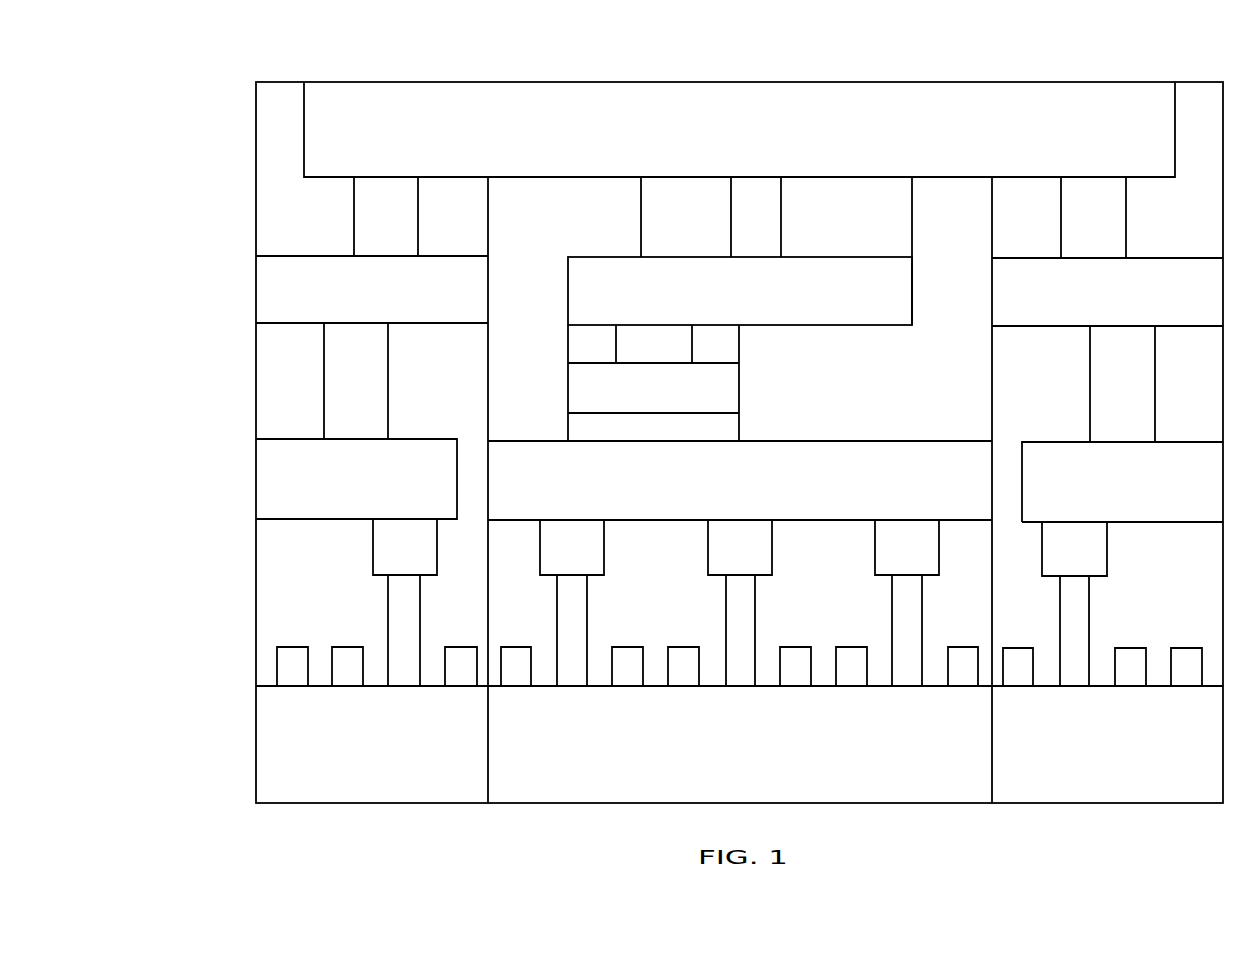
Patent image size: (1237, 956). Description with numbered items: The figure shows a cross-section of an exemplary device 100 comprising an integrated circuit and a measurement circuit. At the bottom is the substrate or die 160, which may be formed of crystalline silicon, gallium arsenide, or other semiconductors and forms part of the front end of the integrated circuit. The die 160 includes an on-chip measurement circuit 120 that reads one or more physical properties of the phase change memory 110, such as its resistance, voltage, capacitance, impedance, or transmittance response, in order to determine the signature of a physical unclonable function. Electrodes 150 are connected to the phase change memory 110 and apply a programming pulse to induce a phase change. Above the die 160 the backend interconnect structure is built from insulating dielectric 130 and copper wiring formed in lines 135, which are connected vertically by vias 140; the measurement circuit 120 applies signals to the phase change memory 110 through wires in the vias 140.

The device 100 is at (262, 52).
The phase change memory 110 is at (722, 501).
The measurement circuit 120 is at (722, 773).
The dielectric 130 is at (542, 219).
The lines 135 is at (331, 299).
The vias 140 is at (576, 353).
The electrodes 150 is at (638, 413).
The die 160 is at (1124, 773).